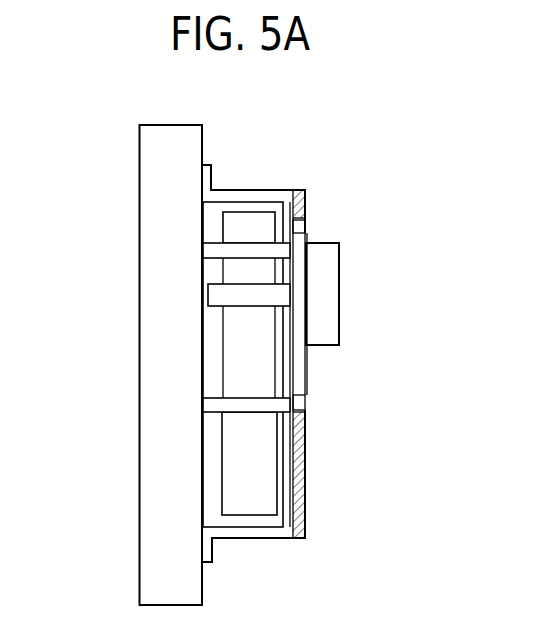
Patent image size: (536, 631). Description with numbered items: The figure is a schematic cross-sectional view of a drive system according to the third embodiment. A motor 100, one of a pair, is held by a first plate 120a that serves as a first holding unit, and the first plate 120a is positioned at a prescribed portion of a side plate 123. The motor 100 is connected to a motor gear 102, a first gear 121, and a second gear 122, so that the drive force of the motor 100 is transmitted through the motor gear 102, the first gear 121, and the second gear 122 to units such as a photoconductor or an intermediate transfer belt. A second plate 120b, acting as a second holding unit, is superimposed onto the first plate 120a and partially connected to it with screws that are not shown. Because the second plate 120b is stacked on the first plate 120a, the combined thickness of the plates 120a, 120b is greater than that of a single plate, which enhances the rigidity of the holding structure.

The motor 100 is at (327, 260).
The motor gear 102 is at (233, 300).
The first plate 120a is at (292, 438).
The second plate 120b is at (303, 485).
The first gear 121 is at (248, 500).
The second gear 122 is at (248, 223).
The side plate 123 is at (170, 140).